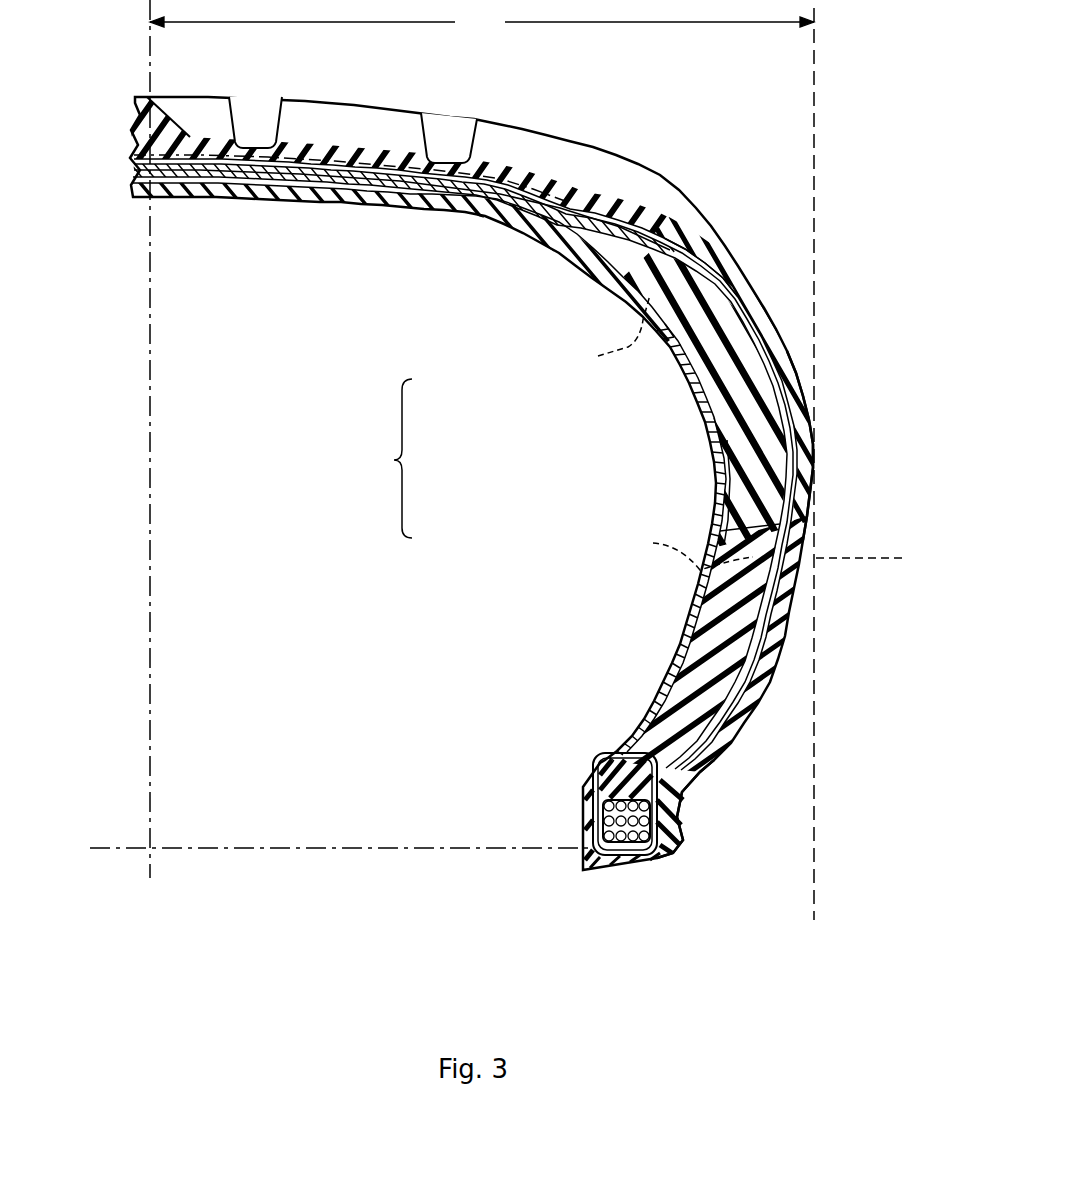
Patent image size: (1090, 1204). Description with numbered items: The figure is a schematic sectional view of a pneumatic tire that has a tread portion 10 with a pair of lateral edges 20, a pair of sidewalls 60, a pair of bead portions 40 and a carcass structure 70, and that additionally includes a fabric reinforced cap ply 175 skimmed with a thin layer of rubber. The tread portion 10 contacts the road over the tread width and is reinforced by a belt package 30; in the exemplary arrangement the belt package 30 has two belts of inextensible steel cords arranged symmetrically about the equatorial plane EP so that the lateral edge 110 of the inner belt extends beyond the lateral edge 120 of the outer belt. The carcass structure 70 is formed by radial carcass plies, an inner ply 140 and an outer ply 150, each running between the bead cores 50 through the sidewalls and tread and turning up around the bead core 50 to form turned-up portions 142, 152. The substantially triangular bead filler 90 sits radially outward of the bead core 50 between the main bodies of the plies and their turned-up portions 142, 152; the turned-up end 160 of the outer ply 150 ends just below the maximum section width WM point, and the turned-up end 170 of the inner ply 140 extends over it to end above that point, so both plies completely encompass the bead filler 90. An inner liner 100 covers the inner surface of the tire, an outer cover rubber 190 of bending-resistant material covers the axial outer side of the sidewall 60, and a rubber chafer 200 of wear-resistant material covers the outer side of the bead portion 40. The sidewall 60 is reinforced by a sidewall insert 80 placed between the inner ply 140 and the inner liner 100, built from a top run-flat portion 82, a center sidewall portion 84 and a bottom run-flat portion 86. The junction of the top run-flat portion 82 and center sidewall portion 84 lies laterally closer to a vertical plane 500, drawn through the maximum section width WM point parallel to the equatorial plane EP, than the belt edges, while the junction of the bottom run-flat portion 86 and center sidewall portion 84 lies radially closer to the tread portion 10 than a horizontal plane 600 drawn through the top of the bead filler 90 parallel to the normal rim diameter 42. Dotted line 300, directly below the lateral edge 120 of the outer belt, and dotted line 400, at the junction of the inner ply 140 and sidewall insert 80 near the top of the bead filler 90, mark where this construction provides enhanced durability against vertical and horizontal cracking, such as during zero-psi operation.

The tread portion 10 is at (326, 99).
The lateral edges 20 is at (650, 150).
The belt package 30 is at (496, 125).
The bead portions 40 is at (595, 805).
The normal rim diameter 42 is at (272, 848).
The bead core 50 is at (600, 815).
The sidewalls 60 is at (810, 452).
The carcass structure 70 is at (188, 187).
The sidewall insert 80 is at (380, 458).
The top run-flat portion 82 is at (598, 278).
The center sidewall portion 84 is at (723, 470).
The bottom run-flat portion 86 is at (710, 608).
The bead filler 90 is at (683, 727).
The inner liner 100 is at (705, 385).
The lateral edge of inner belt 110 is at (690, 240).
The lateral edge of outer belt 120 is at (690, 225).
The inner ply 140 is at (730, 420).
The turned-up portion of inner ply 142 is at (742, 680).
The outer ply 150 is at (760, 330).
The turned-up portion of outer ply 152 is at (700, 778).
The turned-up end of outer ply 160 is at (805, 533).
The turned-up end of inner ply 170 is at (800, 437).
The fabric reinforced cap ply 175 is at (665, 235).
The outer cover rubber 190 is at (810, 488).
The rubber chafer 200 is at (637, 857).
The dotted line 300 is at (597, 333).
The dotted line 400 is at (676, 549).
The vertical plane 500 is at (816, 888).
The horizontal plane 600 is at (842, 560).
The equatorial plane EP is at (150, 408).
The maximum section width point WM is at (482, 22).